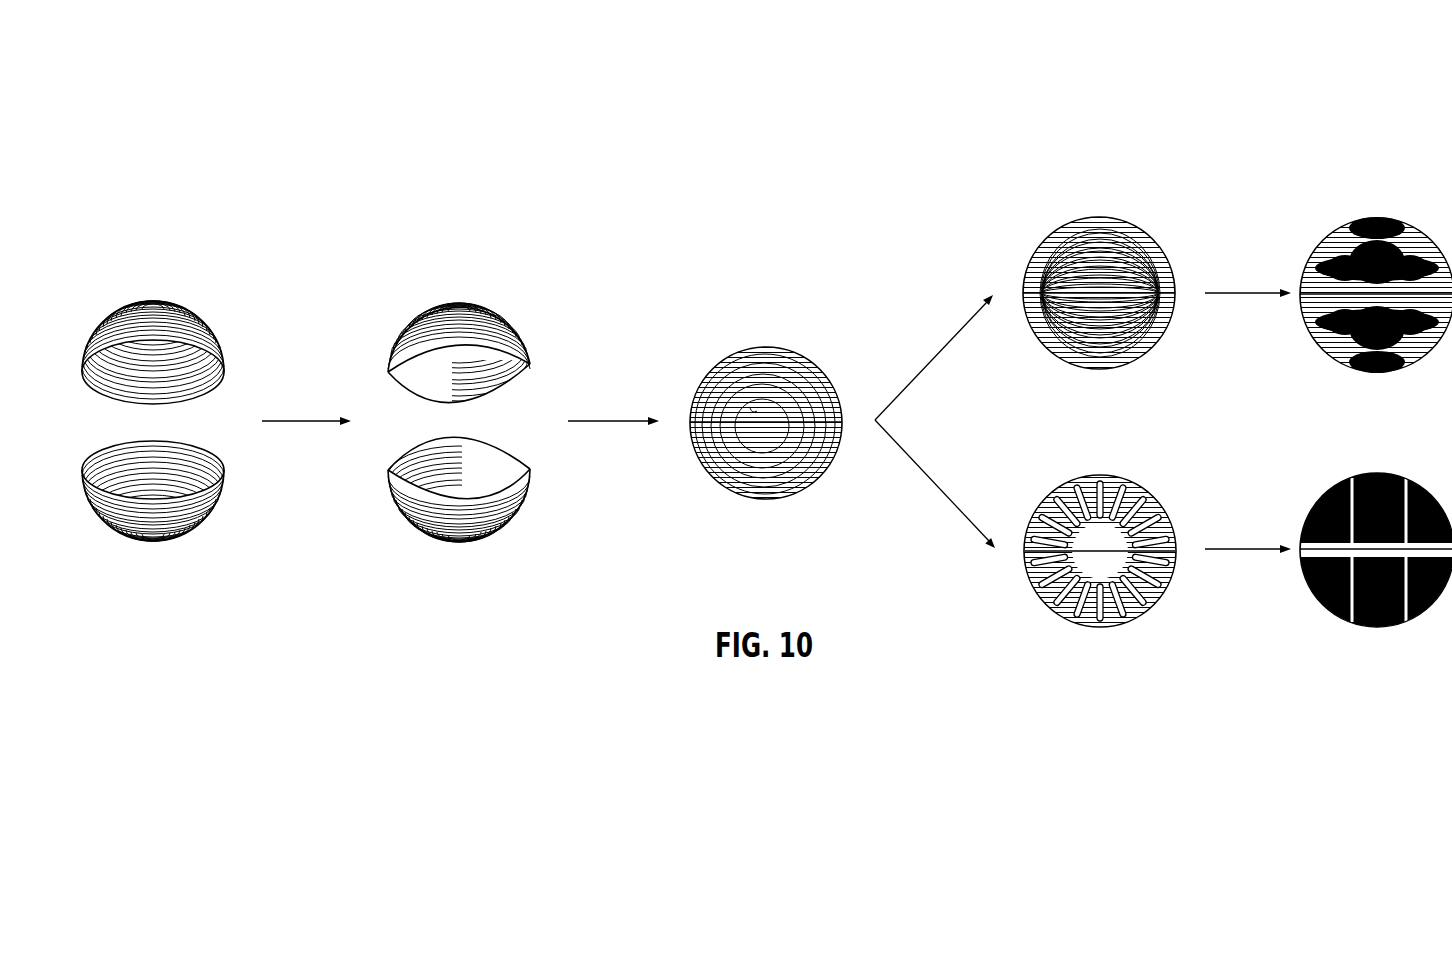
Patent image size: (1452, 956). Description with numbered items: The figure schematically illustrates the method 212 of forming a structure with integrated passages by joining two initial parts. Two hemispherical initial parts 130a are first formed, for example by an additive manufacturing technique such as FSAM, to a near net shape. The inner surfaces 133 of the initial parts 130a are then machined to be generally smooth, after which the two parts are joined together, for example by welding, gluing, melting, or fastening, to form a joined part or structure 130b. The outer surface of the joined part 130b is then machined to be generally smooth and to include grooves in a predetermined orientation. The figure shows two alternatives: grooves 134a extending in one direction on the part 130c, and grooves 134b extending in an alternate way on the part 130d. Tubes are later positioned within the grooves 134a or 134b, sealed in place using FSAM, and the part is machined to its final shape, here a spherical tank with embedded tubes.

The method of forming a part having integrated passages 212 is at (214, 122).
The initial part 130a is at (151, 300).
The inner surfaces 133 is at (511, 373).
The joined part or structure 130b is at (760, 346).
The grooves 134a is at (1095, 220).
The part 130c is at (1113, 296).
The grooves 134b is at (1100, 477).
The part 130d is at (1108, 553).